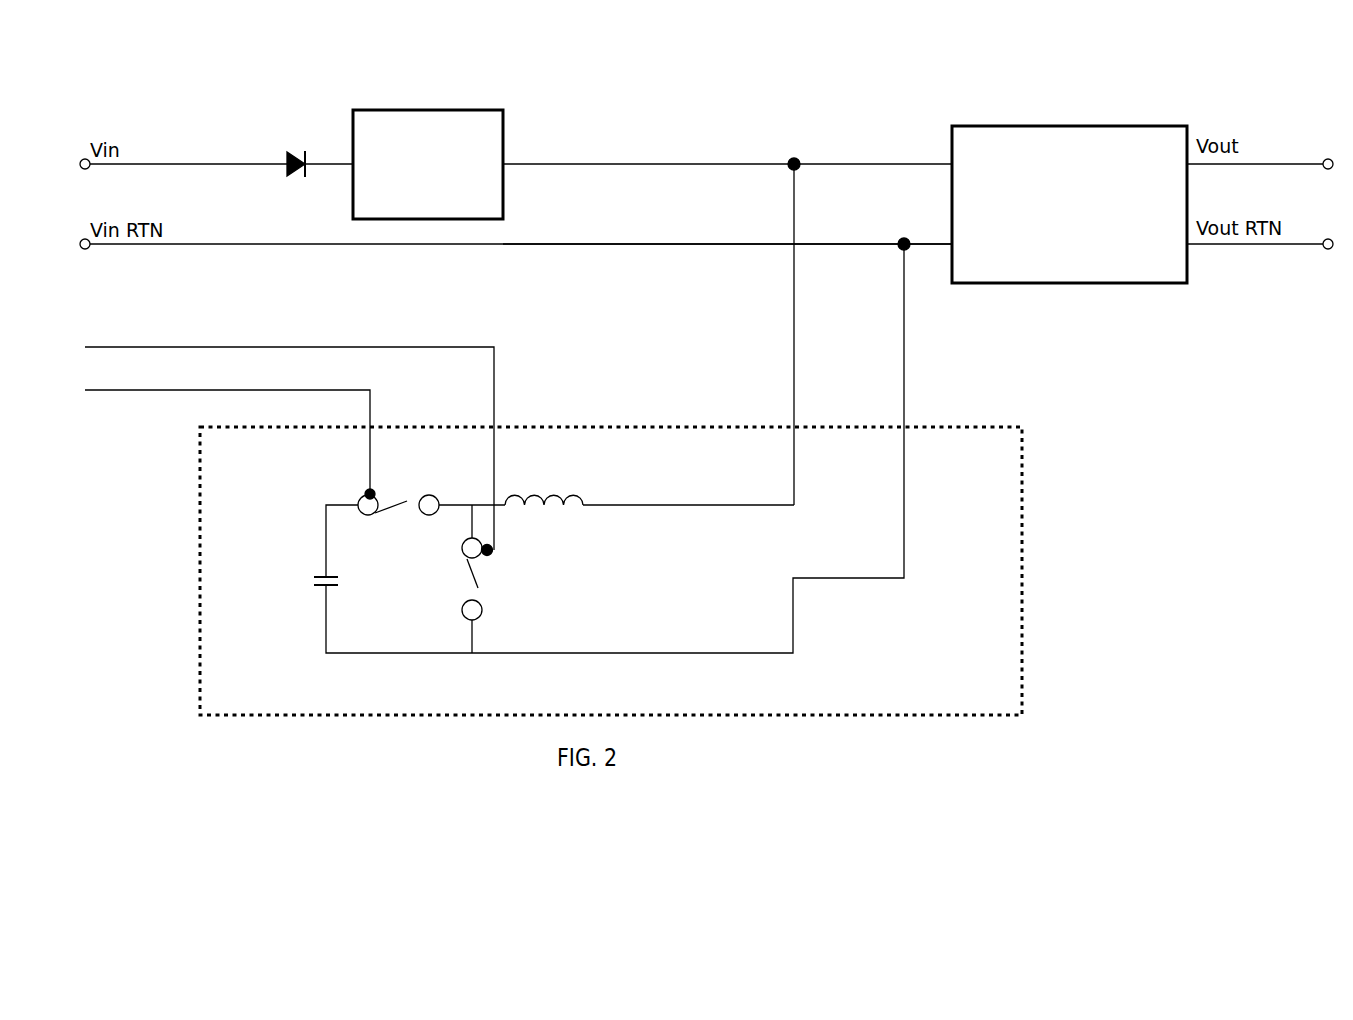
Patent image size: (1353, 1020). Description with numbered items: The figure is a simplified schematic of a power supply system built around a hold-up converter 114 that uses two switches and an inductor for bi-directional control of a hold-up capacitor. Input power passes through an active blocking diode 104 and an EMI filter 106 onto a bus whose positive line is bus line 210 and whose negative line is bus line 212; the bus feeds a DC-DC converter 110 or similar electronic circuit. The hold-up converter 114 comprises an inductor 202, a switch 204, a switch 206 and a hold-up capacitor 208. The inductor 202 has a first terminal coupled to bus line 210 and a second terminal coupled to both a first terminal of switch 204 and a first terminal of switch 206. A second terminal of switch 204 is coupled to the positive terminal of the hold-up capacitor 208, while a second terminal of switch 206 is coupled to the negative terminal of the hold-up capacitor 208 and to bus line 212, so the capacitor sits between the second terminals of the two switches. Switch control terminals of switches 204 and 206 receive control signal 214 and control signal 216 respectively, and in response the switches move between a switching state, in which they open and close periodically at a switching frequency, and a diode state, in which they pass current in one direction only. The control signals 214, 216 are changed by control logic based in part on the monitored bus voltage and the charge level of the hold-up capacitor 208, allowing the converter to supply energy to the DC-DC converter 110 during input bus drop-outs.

The active blocking diode 104 is at (300, 155).
The EMI filter 106 is at (428, 164).
The DC-DC converter 110 is at (1069, 204).
The hold-up converter 114 is at (611, 571).
The inductor 202 is at (578, 492).
The switch 204 is at (362, 497).
The switch 206 is at (483, 610).
The hold-up capacitor 208 is at (318, 573).
The bus line 210 is at (708, 158).
The bus line 212 is at (708, 238).
The control signal 214 is at (253, 347).
The control signal 216 is at (253, 390).